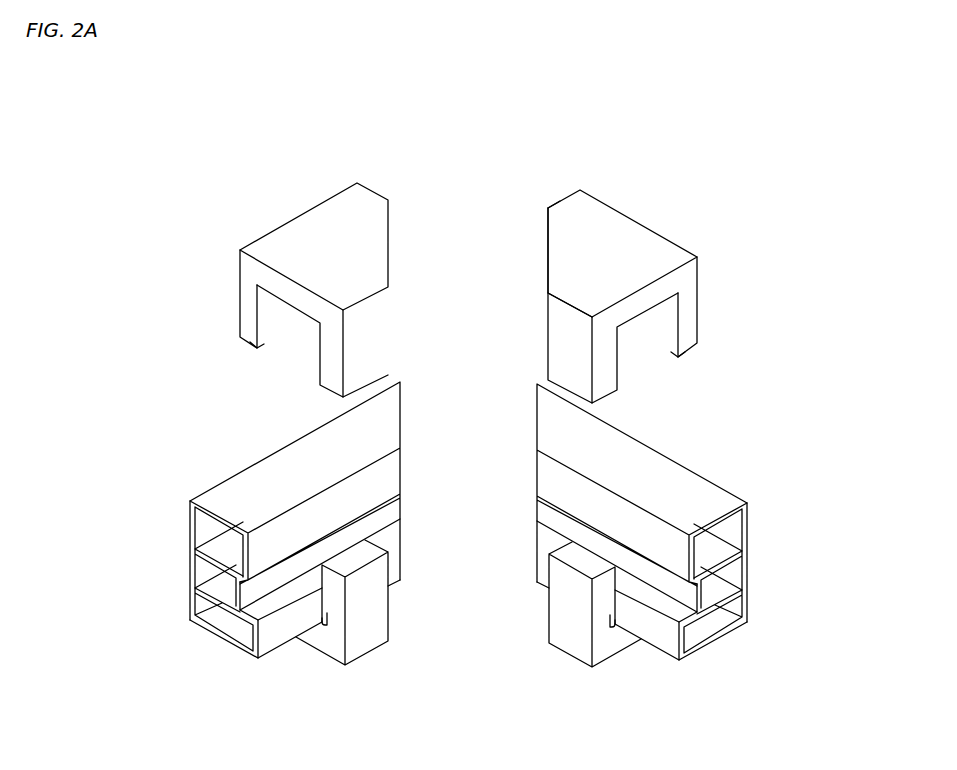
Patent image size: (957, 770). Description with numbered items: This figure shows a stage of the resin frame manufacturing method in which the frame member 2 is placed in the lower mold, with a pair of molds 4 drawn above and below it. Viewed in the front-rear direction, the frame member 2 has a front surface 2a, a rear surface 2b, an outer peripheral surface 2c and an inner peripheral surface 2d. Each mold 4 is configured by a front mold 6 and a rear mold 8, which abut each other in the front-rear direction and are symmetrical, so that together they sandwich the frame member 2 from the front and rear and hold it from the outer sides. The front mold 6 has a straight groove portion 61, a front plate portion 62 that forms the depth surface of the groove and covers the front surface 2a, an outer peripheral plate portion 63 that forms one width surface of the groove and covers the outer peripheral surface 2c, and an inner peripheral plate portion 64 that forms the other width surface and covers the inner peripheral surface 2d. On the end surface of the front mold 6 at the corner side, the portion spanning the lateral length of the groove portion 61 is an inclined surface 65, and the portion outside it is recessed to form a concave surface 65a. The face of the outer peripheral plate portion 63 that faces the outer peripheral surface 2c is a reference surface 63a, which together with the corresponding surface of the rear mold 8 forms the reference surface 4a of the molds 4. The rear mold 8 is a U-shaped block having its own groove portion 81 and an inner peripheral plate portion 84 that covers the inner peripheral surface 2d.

The frame member 2 is at (183, 495).
The front surface 2a is at (262, 500).
The rear surface 2b is at (218, 640).
The outer peripheral surface 2c is at (190, 583).
The inner peripheral surface 2d is at (285, 635).
The mold 4 is at (477, 268).
The reference surface 4a is at (216, 319).
The front mold 6 is at (385, 196).
The groove portion 61 is at (293, 294).
The front plate portion 62 is at (312, 250).
The outer peripheral plate portion 63 is at (250, 305).
The reference surface 63a is at (729, 328).
The inner peripheral plate portion 64 is at (560, 338).
The inclined surface 65 is at (547, 263).
The concave surface 65a is at (556, 205).
The rear mold 8 is at (362, 670).
The groove portion 81 is at (327, 625).
The inner peripheral plate portion 84 is at (570, 610).